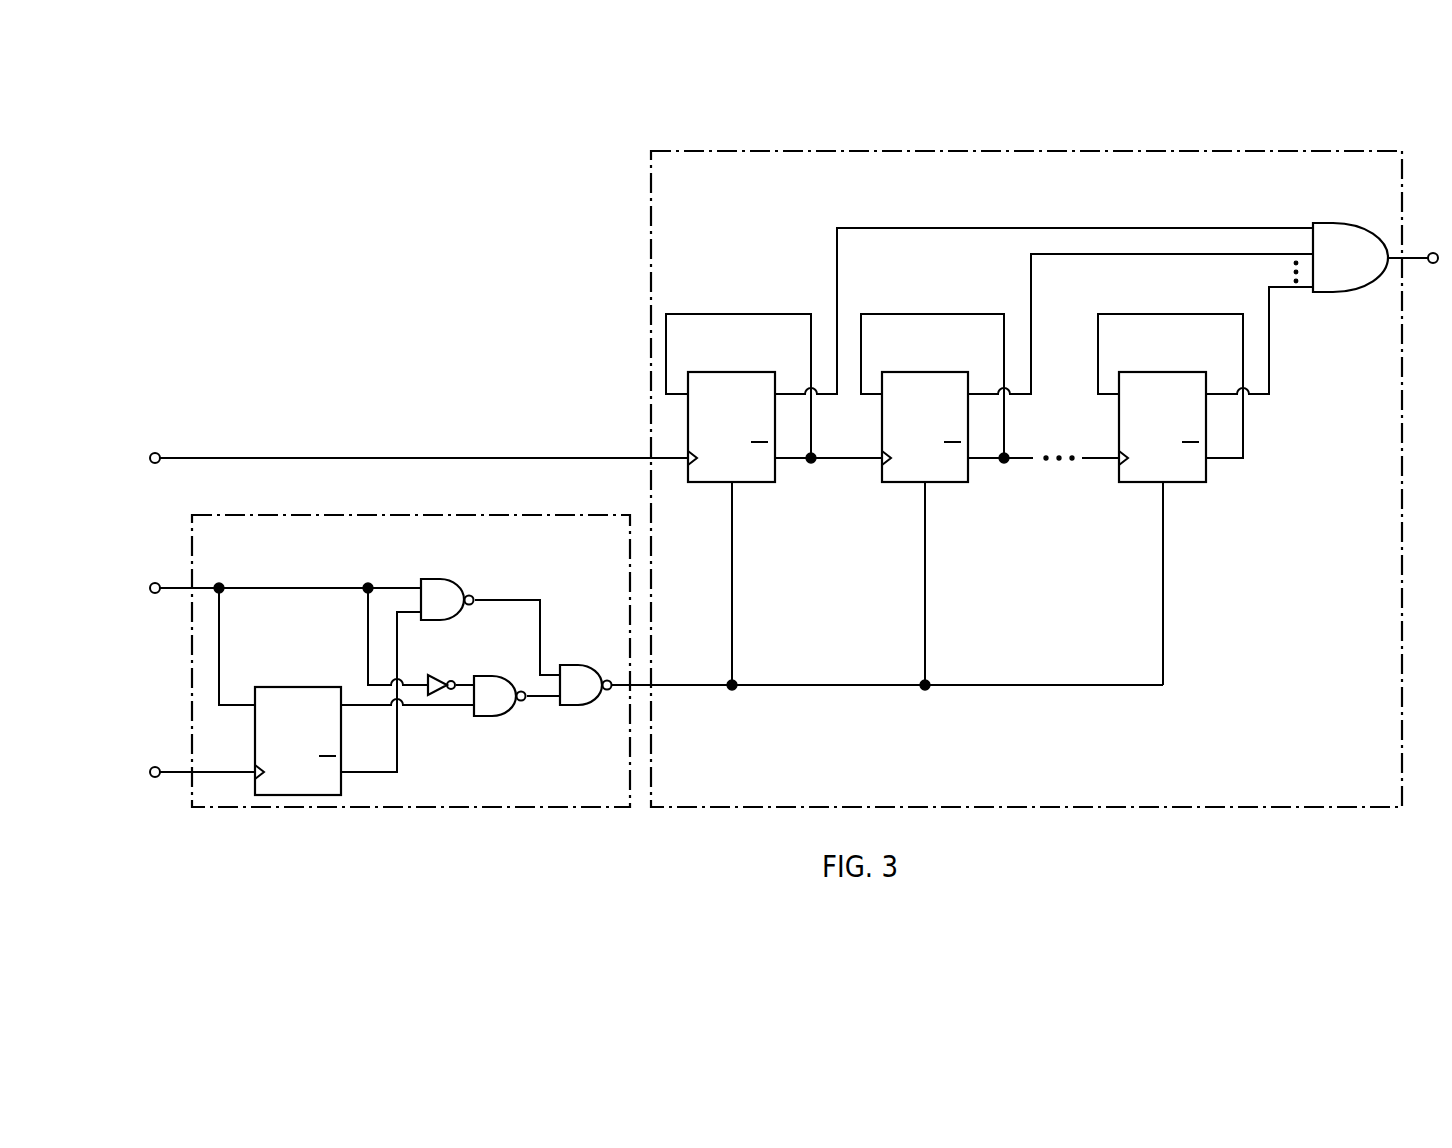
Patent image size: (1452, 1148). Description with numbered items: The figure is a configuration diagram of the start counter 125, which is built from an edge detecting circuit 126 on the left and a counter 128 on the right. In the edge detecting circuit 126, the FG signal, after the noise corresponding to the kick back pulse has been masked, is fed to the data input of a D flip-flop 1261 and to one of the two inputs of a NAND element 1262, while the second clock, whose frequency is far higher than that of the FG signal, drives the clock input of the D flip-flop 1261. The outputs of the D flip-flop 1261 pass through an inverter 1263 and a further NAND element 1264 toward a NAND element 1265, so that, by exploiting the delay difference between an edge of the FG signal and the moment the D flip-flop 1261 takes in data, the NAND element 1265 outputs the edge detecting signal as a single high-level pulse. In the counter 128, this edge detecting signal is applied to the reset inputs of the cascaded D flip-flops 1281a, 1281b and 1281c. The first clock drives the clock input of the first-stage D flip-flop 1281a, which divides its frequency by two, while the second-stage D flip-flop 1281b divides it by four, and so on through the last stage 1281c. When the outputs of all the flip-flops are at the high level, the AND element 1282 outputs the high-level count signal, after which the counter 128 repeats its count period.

The start counter 125 is at (390, 248).
The edge detecting circuit 126 is at (407, 520).
The counter 128 is at (1132, 153).
The D flip-flop 1261 is at (315, 668).
The NAND element 1262 is at (448, 588).
The inverter 1263 is at (435, 683).
The NAND gate 1264 is at (495, 718).
The NAND element 1265 is at (572, 668).
The D flip-flop in a first stage 1281a is at (718, 378).
The D flip-flop in a second stage 1281b is at (906, 378).
The D flip-flop 1281c is at (1172, 352).
The AND element 1282 is at (1357, 202).